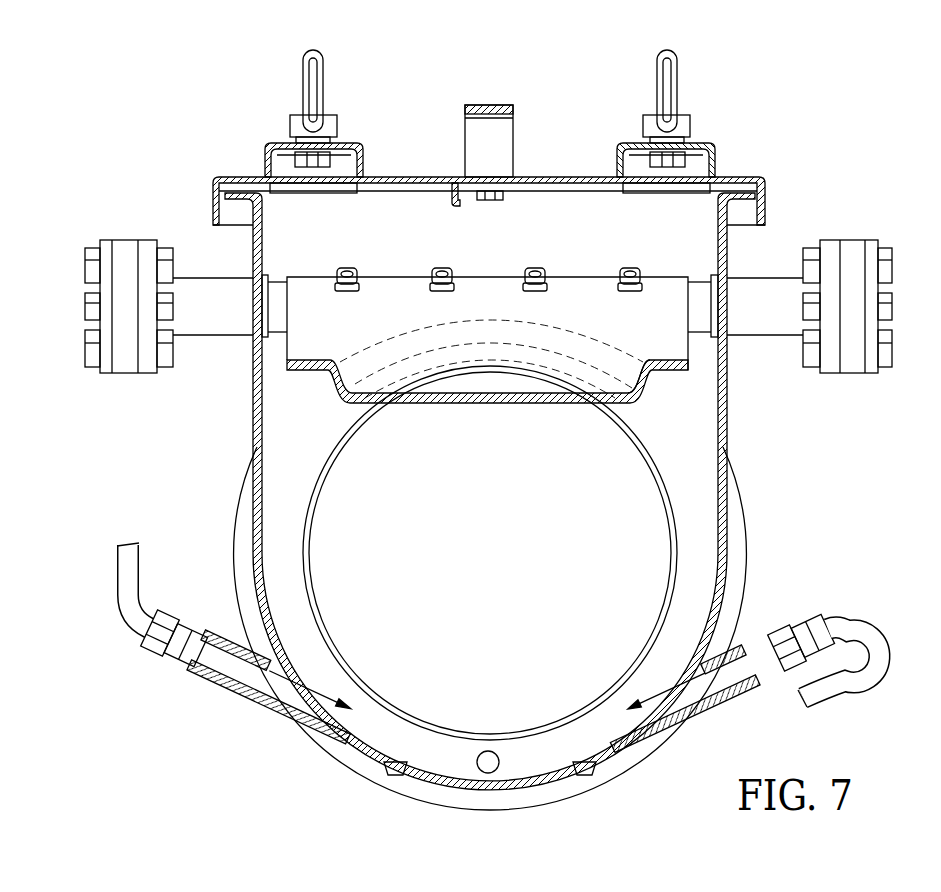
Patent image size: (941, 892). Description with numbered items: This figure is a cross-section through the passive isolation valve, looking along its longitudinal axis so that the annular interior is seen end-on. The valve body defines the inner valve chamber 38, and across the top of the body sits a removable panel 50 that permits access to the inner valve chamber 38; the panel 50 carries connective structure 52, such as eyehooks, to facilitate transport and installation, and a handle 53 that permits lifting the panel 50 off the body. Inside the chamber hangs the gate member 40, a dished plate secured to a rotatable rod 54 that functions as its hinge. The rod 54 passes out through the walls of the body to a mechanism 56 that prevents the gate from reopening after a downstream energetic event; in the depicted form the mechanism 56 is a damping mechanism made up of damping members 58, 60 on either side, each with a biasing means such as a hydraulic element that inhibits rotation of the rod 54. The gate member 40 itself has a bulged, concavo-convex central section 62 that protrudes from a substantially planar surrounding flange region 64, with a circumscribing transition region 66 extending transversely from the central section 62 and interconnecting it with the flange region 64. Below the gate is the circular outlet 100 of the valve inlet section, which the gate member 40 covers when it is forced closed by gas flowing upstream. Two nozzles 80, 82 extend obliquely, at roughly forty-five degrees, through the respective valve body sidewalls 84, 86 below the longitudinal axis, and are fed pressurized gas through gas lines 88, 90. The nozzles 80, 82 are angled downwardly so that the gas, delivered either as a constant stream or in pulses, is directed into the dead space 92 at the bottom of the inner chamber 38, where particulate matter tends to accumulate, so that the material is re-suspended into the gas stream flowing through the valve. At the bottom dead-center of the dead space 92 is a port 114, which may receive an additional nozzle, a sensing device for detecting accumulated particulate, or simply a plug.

The inner valve chamber 38 is at (304, 406).
The gate member 40 is at (672, 276).
The removable panel 50 is at (768, 205).
The connective structure 52 is at (318, 75).
The handle 53 is at (484, 105).
The rotatable rod 54 is at (277, 290).
The mechanism 56 is at (165, 297).
The damping member 58 is at (120, 376).
The damping member 60 is at (860, 376).
The central section 62 is at (497, 403).
The flange region 64 is at (660, 370).
The transition region 66 is at (582, 352).
The nozzle 80 is at (240, 662).
The nozzle 82 is at (737, 665).
The valve body sidewall 84 is at (248, 603).
The valve body sidewall 86 is at (735, 612).
The gas line 88 is at (118, 600).
The gas line 90 is at (862, 630).
The dead space 92 is at (597, 742).
The outlet 100 is at (610, 548).
The port 114 is at (493, 767).